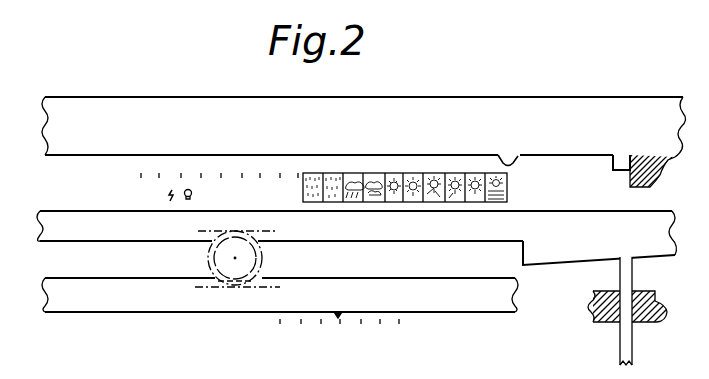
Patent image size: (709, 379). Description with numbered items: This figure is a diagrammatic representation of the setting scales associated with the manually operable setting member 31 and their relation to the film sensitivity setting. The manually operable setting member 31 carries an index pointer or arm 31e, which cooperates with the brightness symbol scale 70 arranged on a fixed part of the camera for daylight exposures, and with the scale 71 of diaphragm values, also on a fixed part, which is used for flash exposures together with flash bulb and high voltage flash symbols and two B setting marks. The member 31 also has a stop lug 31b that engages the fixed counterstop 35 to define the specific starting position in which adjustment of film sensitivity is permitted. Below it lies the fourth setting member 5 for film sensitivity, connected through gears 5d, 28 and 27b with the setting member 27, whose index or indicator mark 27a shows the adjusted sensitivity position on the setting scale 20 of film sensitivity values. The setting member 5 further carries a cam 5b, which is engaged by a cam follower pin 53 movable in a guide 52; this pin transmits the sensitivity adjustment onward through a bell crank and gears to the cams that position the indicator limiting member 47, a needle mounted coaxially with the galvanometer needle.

The manually operable setting member 31 is at (469, 108).
The index pointer or arm 31e is at (515, 164).
The stop lug 31b is at (618, 170).
The counterstop 35 is at (642, 174).
The scale having diaphragm values 71 is at (208, 177).
The brightness symbol scale 70 is at (375, 174).
The fourth setting member 5 is at (670, 225).
The cam 5b is at (575, 262).
The gear 5d is at (210, 236).
The gear 28 is at (263, 256).
The setting member 27 is at (157, 302).
The gear 27b is at (262, 283).
The index or indicator mark 27a is at (339, 315).
The setting scale 20 is at (382, 338).
The guide 52 is at (640, 311).
The cam follower pin 53 is at (629, 279).
The limiting member 47 is at (662, 370).